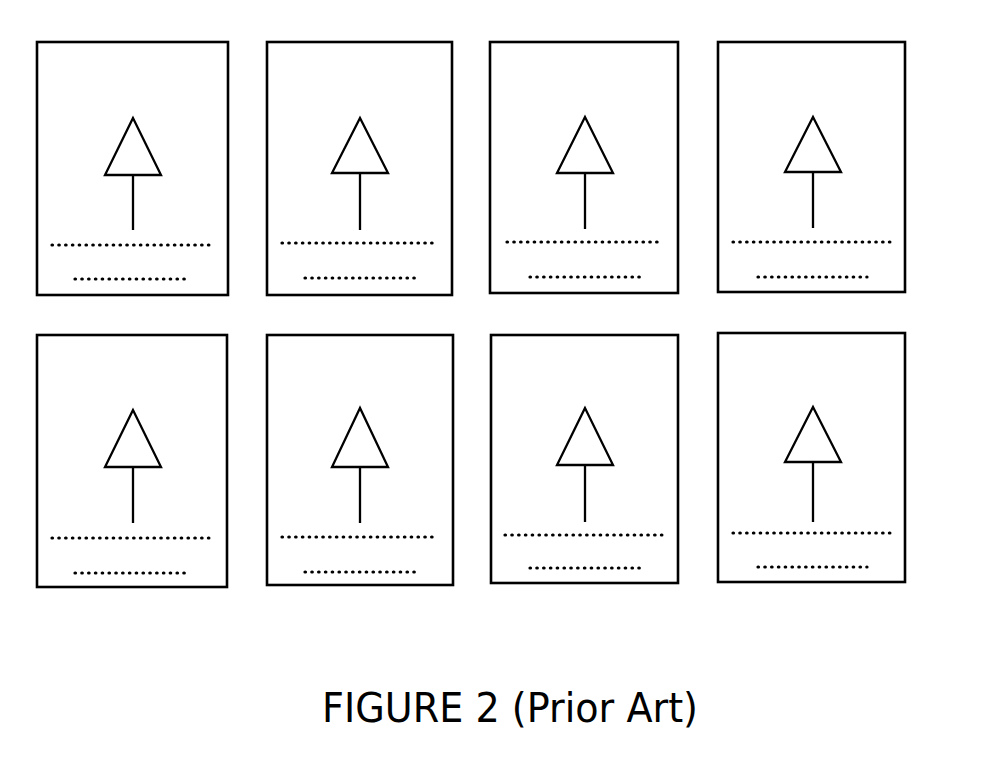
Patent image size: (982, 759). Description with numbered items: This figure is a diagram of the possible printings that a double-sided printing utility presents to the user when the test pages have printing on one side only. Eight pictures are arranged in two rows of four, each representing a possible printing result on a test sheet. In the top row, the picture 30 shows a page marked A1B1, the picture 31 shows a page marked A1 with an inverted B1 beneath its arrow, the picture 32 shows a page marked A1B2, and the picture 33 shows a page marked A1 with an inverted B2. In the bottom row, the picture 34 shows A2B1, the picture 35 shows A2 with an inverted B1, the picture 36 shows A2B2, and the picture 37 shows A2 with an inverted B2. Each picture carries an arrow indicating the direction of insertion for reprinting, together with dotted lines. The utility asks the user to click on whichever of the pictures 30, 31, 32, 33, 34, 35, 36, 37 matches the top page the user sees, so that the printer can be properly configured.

The picture 30 is at (173, 42).
The picture 31 is at (398, 42).
The picture 32 is at (625, 42).
The picture 33 is at (852, 42).
The picture 34 is at (160, 587).
The picture 35 is at (387, 585).
The picture 36 is at (610, 583).
The picture 37 is at (838, 582).